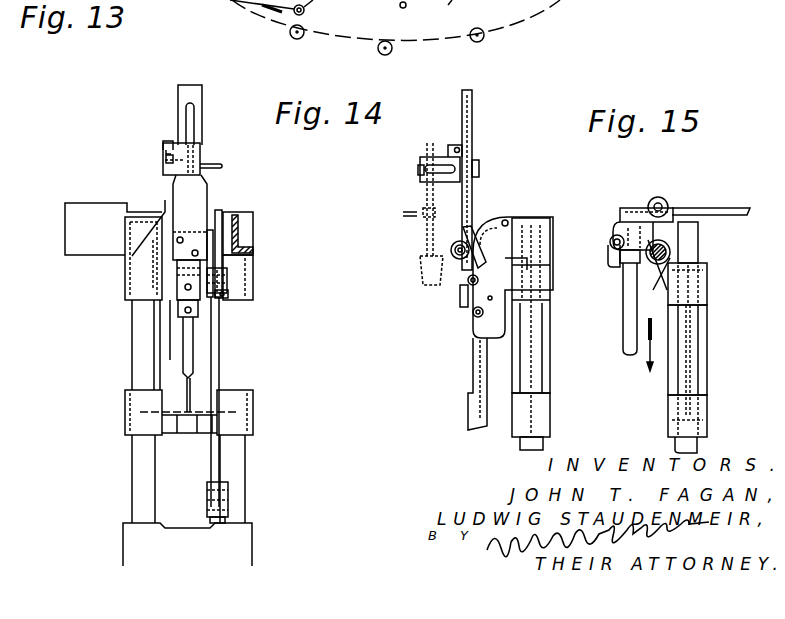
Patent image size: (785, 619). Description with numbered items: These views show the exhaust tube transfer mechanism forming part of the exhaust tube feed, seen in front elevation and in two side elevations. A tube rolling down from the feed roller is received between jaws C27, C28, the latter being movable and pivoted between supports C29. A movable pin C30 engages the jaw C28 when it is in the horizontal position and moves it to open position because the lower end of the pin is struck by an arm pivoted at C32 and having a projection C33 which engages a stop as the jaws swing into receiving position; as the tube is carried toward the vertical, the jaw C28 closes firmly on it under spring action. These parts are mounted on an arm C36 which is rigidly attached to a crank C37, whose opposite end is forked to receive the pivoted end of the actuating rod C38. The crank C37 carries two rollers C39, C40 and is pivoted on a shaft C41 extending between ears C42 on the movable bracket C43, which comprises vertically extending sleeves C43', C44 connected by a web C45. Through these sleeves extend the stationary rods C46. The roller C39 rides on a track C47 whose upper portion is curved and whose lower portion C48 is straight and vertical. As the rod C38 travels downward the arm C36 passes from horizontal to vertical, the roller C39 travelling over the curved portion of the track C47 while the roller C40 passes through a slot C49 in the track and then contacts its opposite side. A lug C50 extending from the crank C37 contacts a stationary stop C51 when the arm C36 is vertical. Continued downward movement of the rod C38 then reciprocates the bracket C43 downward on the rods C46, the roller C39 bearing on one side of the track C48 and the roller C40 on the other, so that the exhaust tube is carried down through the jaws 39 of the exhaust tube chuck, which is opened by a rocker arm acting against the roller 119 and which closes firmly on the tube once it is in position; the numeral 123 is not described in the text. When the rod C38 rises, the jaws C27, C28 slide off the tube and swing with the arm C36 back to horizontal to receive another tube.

In FIG. 13, the roller 119 is at (399, 27).
In FIG. 13, the index station 123 is at (445, 14).
In FIG. 14, the jaw 39 is at (416, 226).
In FIG. 13, the jaw C27 is at (145, 152).
In FIG. 13, the jaw C28 is at (168, 159).
In FIG. 14, the jaw C28 is at (417, 169).
In FIG. 14, the supports C29 is at (420, 155).
In FIG. 13, the movable pin C30 is at (151, 140).
In FIG. 14, the movable pin C30 is at (440, 214).
In FIG. 14, the pivot C32 is at (443, 140).
In FIG. 14, the projection C33 is at (490, 161).
In FIG. 13, the arm C36 is at (208, 172).
In FIG. 14, the arm C36 is at (483, 180).
In FIG. 15, the arm C36 is at (711, 200).
In FIG. 13, the crank C37 is at (149, 220).
In FIG. 15, the crank C37 is at (640, 219).
In FIG. 13, the actuating rod C38 is at (228, 336).
In FIG. 15, the actuating rod C38 is at (610, 309).
In FIG. 13, the roller C39 is at (254, 233).
In FIG. 14, the roller C39 is at (478, 225).
In FIG. 15, the roller C39 is at (666, 196).
In FIG. 13, the roller C40 is at (251, 305).
In FIG. 14, the roller C40 is at (458, 313).
In FIG. 15, the roller C40 is at (599, 237).
In FIG. 14, the shaft C41 is at (531, 321).
In FIG. 15, the shaft C41 is at (690, 246).
In FIG. 13, the ears C42 is at (113, 229).
In FIG. 15, the ears C42 is at (654, 305).
In FIG. 15, the movable bracket C43 is at (705, 350).
In FIG. 13, the sleeve C43' is at (180, 258).
In FIG. 15, the sleeve C43' is at (705, 263).
In FIG. 13, the sleeve C44 is at (183, 412).
In FIG. 15, the sleeve C44 is at (705, 420).
In FIG. 13, the web C45 is at (129, 345).
In FIG. 13, the stationary rods C46 is at (186, 500).
In FIG. 13, the track C47 is at (246, 244).
In FIG. 14, the track C47 is at (513, 265).
In FIG. 13, the straight track portion C48 is at (246, 410).
In FIG. 14, the straight track portion C48 is at (460, 384).
In FIG. 13, the slot C49 is at (247, 263).
In FIG. 14, the slot C49 is at (453, 292).
In FIG. 14, the lug C50 is at (552, 275).
In FIG. 15, the lug C50 is at (597, 262).
In FIG. 14, the stationary stop C51 is at (548, 292).
In FIG. 15, the stationary stop C51 is at (600, 275).